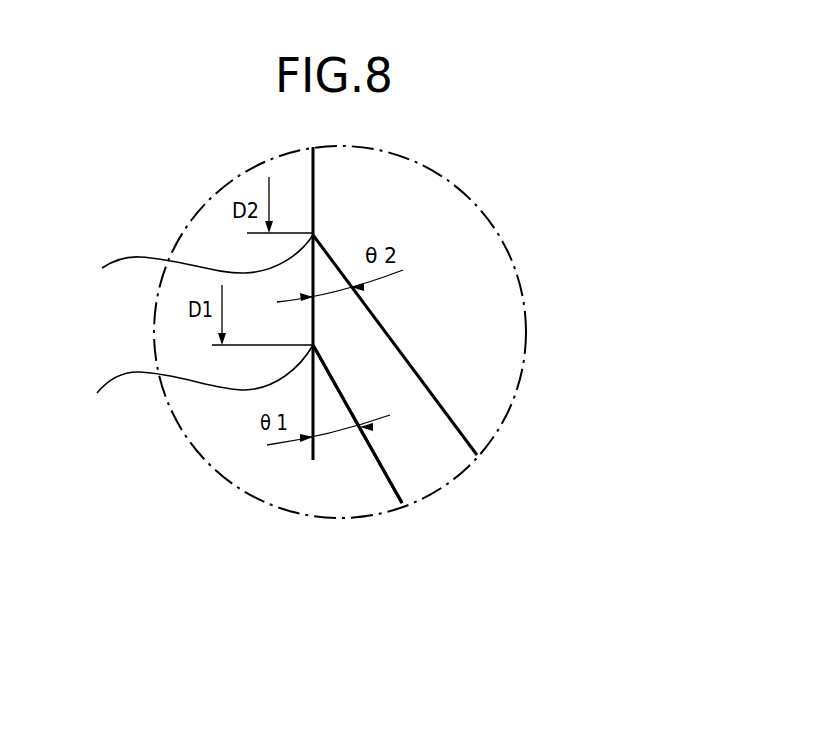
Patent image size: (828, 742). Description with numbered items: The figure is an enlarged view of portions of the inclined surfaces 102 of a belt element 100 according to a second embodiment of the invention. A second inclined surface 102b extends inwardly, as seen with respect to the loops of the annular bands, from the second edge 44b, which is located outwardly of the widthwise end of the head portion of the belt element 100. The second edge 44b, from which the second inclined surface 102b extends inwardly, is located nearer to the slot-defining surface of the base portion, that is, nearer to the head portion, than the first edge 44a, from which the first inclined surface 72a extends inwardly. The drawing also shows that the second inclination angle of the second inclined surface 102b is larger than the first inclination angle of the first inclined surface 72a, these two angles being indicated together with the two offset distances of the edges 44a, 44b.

The belt element 100 is at (212, 241).
The second edge 44b is at (196, 266).
The first edge 44a is at (196, 381).
The inclined surfaces 102 is at (363, 484).
The second inclined surface 102b is at (460, 437).
The first inclined surface 72a is at (396, 486).